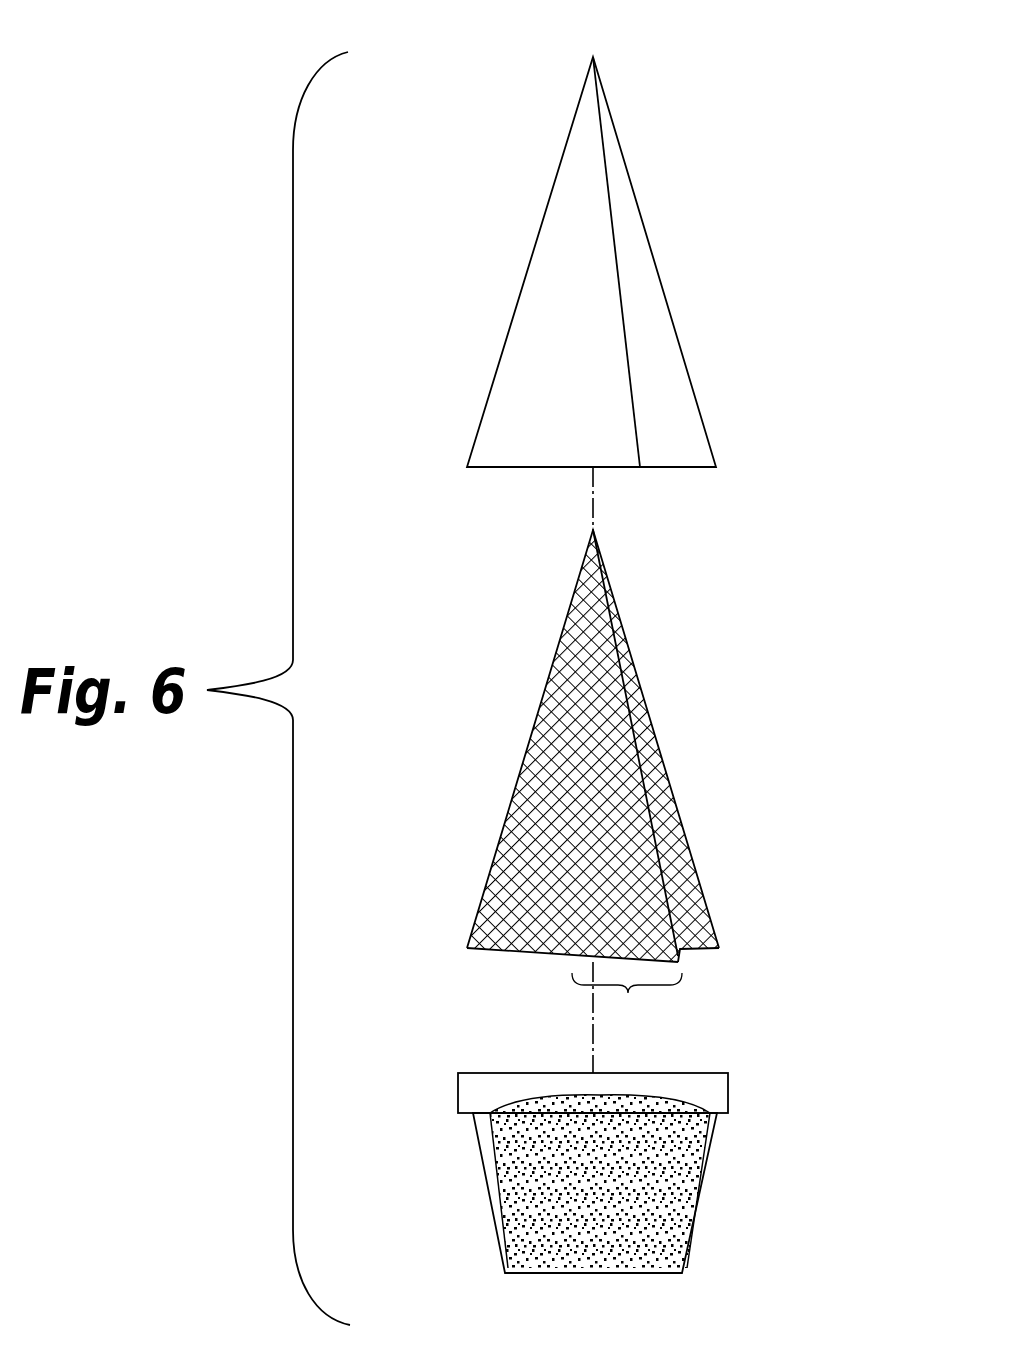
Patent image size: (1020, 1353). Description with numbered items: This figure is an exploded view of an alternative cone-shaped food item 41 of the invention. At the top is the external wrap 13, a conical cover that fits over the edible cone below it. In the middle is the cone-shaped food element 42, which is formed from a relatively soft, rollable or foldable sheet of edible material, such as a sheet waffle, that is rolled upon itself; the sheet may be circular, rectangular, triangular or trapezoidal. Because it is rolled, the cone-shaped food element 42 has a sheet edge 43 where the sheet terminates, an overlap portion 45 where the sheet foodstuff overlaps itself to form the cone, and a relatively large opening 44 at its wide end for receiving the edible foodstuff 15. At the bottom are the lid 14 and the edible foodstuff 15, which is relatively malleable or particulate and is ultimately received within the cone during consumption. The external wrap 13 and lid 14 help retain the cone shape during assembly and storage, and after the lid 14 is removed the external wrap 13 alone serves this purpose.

The external wrap 13 is at (657, 262).
The lid 14 is at (728, 1096).
The edible foodstuff 15 is at (660, 1205).
The food item 41 is at (632, 637).
The cone-shaped food element 42 is at (660, 742).
The sheet edge 43 is at (700, 856).
The large opening 44 is at (591, 766).
The overlap portion 45 is at (627, 1006).